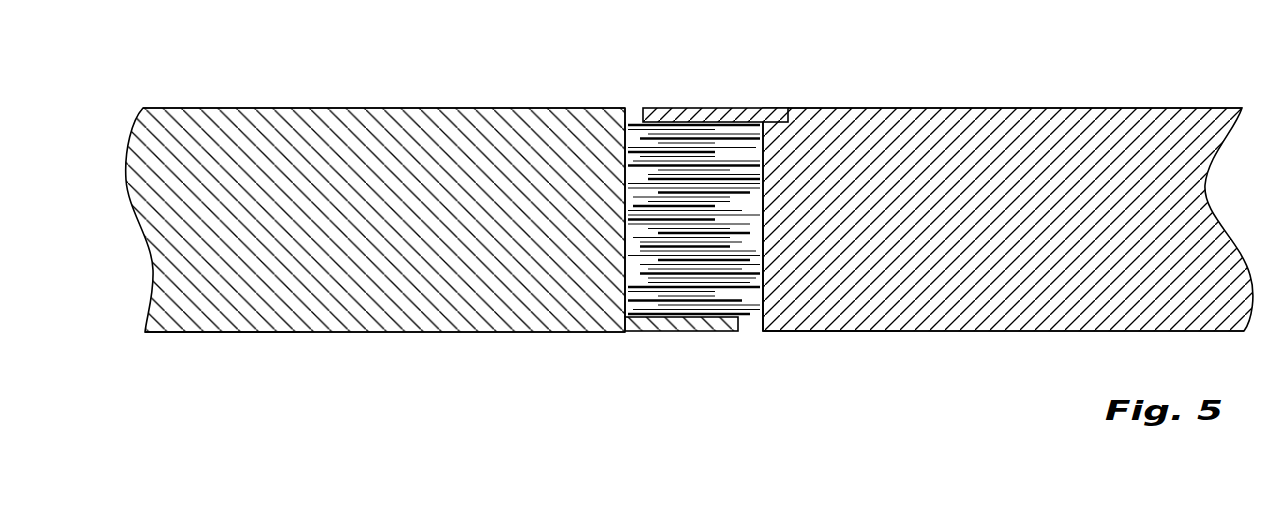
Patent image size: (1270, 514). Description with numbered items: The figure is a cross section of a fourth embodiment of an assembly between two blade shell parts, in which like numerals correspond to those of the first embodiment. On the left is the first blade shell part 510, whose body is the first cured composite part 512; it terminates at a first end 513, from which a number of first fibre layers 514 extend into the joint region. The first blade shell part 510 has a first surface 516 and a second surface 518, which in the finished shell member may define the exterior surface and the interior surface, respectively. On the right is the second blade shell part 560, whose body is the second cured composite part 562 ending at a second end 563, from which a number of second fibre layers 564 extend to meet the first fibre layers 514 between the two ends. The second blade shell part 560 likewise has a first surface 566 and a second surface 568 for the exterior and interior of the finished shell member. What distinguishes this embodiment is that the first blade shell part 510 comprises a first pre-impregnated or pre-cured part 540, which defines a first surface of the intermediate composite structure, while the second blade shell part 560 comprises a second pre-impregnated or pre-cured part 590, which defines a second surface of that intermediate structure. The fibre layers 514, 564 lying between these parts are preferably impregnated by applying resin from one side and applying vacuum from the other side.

The first blade shell part 510 is at (199, 82).
The first cured composite part 512 is at (225, 318).
The first end 513 is at (630, 111).
The first fibre layers 514 is at (637, 292).
The first surface 516 is at (393, 108).
The second surface 518 is at (342, 328).
The first pre-impregnated or pre-cured part 540 is at (688, 320).
The second blade shell part 560 is at (992, 56).
The second cured composite part 562 is at (882, 280).
The second end 563 is at (762, 333).
The second fibre layers 564 is at (757, 170).
The first surface 566 is at (1067, 107).
The second surface 568 is at (1017, 333).
The second pre-impregnated or pre-cured part 590 is at (678, 114).